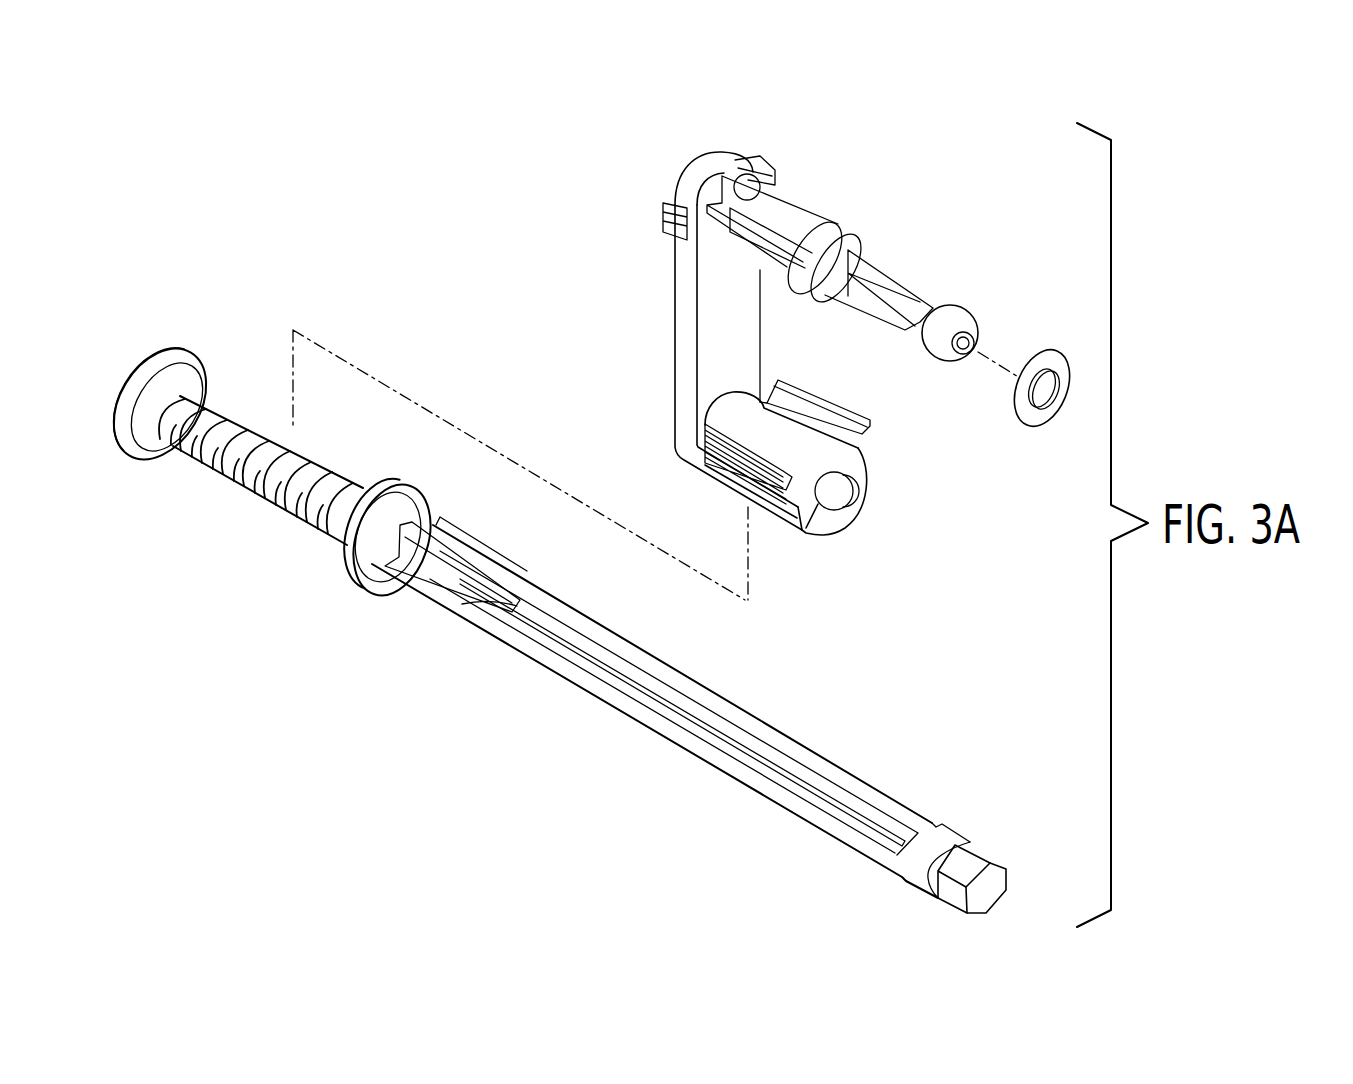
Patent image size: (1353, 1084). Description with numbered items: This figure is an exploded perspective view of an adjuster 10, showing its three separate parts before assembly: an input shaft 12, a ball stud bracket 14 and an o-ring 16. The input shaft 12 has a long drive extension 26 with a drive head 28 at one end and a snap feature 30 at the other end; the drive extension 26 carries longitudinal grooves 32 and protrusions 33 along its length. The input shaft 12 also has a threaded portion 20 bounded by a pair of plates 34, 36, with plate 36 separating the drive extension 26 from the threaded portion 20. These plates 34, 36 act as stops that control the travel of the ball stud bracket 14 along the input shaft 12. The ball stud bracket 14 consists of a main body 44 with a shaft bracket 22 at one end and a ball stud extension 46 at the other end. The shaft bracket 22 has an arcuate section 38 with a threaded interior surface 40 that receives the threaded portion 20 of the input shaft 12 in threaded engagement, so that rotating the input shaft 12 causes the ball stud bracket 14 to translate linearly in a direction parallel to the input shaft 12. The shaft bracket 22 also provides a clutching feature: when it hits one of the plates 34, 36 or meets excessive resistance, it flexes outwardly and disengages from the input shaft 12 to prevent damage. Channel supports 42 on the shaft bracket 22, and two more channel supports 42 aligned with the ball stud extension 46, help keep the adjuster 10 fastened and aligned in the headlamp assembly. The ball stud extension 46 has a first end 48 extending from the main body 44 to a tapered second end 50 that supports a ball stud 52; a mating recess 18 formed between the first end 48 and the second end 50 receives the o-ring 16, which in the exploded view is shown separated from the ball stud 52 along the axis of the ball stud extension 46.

The adjuster 10 is at (296, 605).
The input shaft 12 is at (798, 826).
The ball stud bracket 14 is at (662, 260).
The o-ring 16 is at (1020, 427).
The mating recess 18 is at (847, 225).
The threaded portion 20 is at (300, 519).
The shaft bracket 22 is at (771, 430).
The drive extension 26 is at (836, 761).
The drive head 28 is at (987, 890).
The snap feature 30 is at (466, 534).
The longitudinal grooves 32 is at (805, 777).
The protrusions 33 is at (887, 800).
The plate 34 is at (133, 388).
The plate 36 is at (420, 506).
The arcuate section 38 is at (797, 531).
The threaded interior surface 40 is at (827, 517).
The channel supports 42 is at (668, 224).
The main body 44 is at (683, 294).
The ball stud extension 46 is at (818, 215).
The first end 48 is at (732, 173).
The tapered second end 50 is at (887, 276).
The ball stud 52 is at (951, 318).